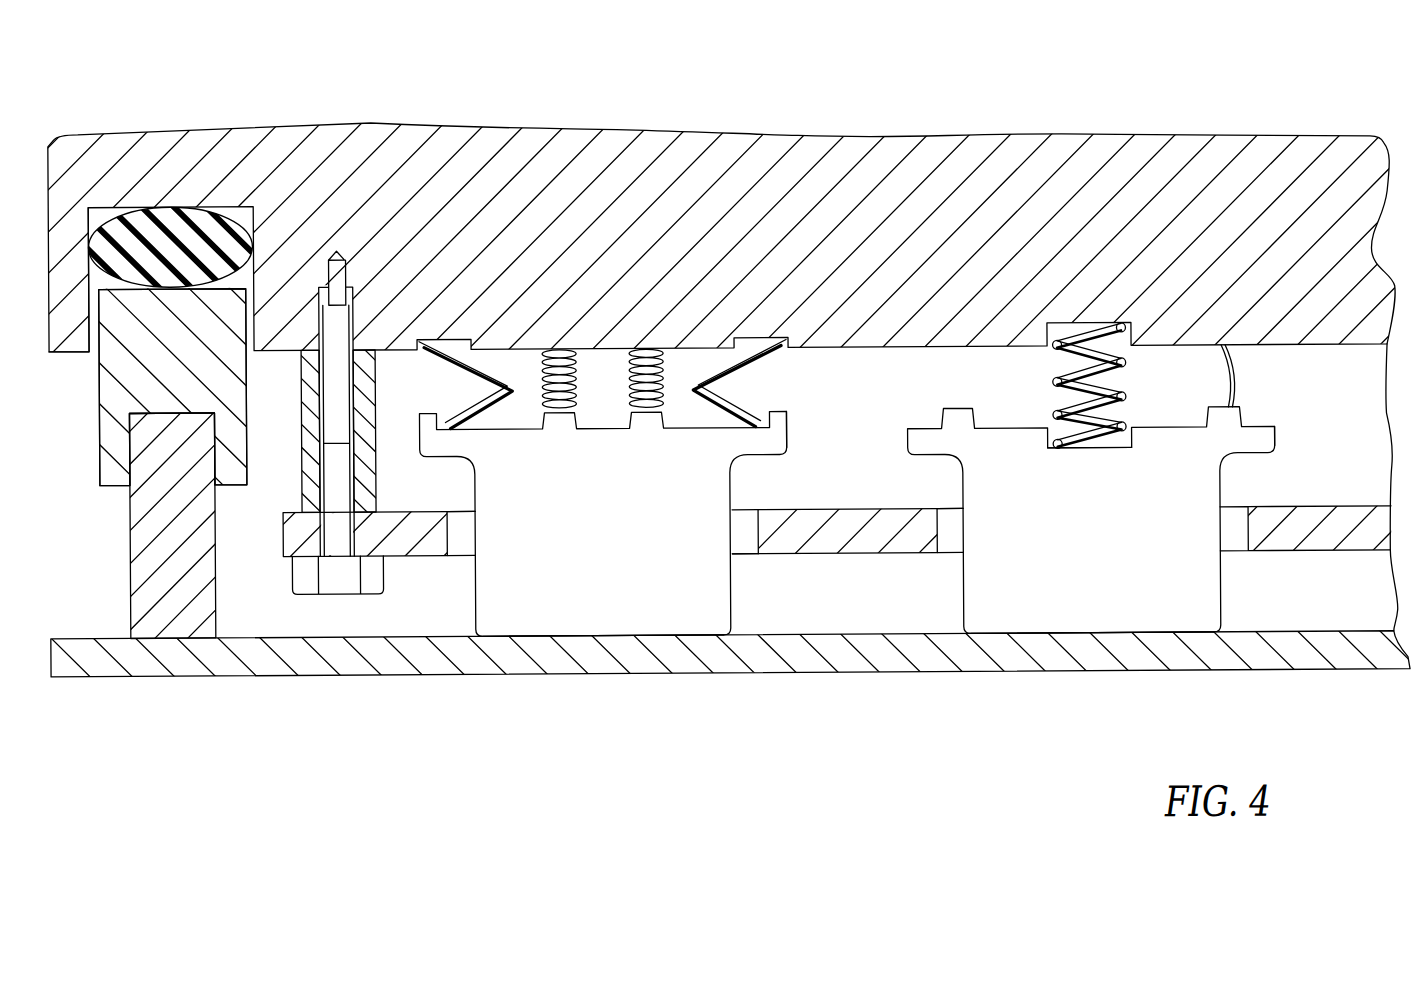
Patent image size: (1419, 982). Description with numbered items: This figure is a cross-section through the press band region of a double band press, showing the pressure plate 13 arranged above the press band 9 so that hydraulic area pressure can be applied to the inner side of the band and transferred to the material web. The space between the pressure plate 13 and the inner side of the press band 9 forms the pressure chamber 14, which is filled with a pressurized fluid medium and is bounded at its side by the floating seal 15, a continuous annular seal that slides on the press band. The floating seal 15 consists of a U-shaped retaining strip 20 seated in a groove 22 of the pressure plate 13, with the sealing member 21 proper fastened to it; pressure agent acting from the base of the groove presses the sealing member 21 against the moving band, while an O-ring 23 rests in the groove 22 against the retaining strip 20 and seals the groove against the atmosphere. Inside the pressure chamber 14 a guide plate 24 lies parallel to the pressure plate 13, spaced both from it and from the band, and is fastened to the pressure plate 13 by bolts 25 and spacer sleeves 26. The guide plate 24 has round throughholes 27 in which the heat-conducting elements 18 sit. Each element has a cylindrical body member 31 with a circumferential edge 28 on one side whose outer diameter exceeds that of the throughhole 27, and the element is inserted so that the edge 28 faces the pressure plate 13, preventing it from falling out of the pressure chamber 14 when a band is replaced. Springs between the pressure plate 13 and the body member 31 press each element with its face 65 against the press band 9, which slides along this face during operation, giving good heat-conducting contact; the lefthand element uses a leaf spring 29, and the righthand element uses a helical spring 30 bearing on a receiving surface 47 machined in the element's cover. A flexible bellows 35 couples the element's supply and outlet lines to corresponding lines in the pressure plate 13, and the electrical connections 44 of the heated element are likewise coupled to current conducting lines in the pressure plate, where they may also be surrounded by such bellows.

The press band 9 is at (783, 652).
The pressure plate 13 is at (791, 165).
The pressure chamber 14 is at (898, 596).
The floating seal 15 is at (70, 424).
The heat-conducting element 18 is at (553, 597).
The U-shaped retaining strip 20 is at (183, 369).
The sealing member 21 is at (165, 602).
The groove 22 is at (94, 331).
The O-ring 23 is at (175, 232).
The guide plate 24 is at (835, 534).
The bolt 25 is at (333, 576).
The spacer sleeve 26 is at (312, 462).
The throughhole 27 is at (460, 531).
The edge 28 is at (758, 442).
The leaf spring 29 is at (468, 366).
The helical spring 30 is at (1097, 439).
The body member 31 is at (587, 540).
The flexible bellows 35 is at (633, 389).
The electrical connections 44 is at (1234, 375).
The receiving surface 47 is at (1110, 425).
The face 65 is at (628, 638).